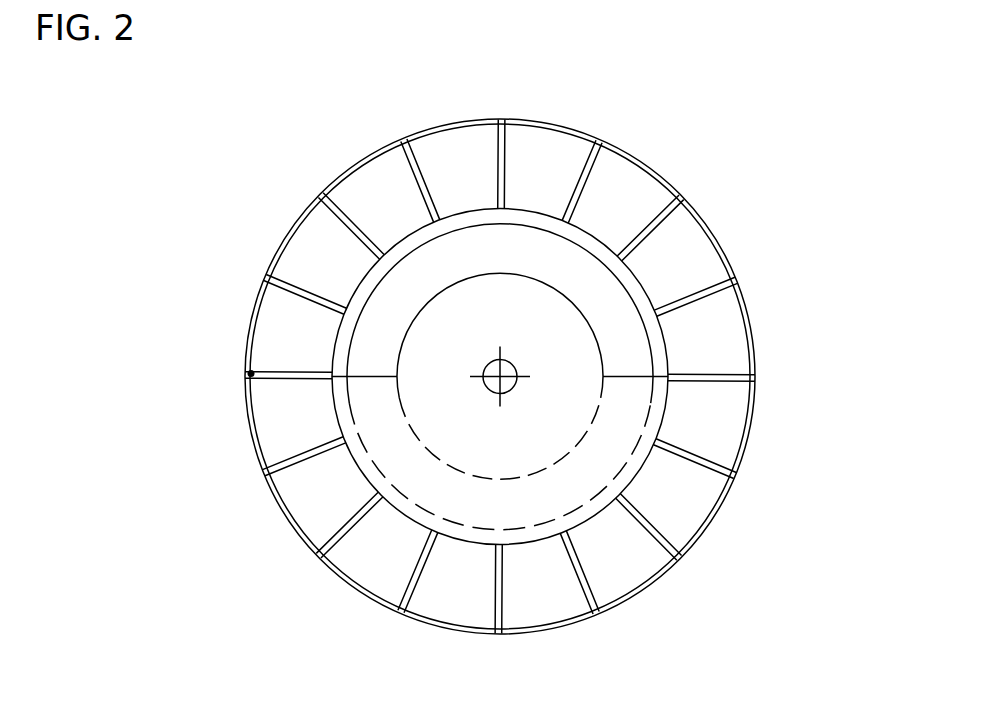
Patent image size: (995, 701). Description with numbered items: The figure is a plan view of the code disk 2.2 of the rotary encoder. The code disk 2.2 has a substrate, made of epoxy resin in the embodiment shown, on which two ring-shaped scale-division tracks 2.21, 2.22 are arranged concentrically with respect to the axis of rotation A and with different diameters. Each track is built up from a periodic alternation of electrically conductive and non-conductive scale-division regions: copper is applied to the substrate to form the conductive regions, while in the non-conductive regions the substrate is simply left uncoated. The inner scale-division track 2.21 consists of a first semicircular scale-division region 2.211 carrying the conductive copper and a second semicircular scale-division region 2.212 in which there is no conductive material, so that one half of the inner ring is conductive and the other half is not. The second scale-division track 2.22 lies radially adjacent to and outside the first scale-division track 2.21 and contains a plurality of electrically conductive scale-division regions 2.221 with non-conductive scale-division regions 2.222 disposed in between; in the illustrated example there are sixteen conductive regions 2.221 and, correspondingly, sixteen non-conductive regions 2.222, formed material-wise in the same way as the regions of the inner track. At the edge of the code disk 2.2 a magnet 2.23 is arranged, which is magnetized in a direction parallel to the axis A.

The code disk 2.2 is at (293, 579).
The inner scale-division track 2.21 is at (660, 341).
The first semicircular scale-division region 2.211 is at (568, 262).
The second semicircular scale-division region 2.212 is at (377, 460).
The second scale-division track 2.22 is at (698, 237).
The electrically conductive scale-division regions 2.221 is at (460, 157).
The non-conductive scale-division regions 2.222 is at (407, 143).
The magnet 2.23 is at (249, 373).
The axis of rotation A is at (492, 378).